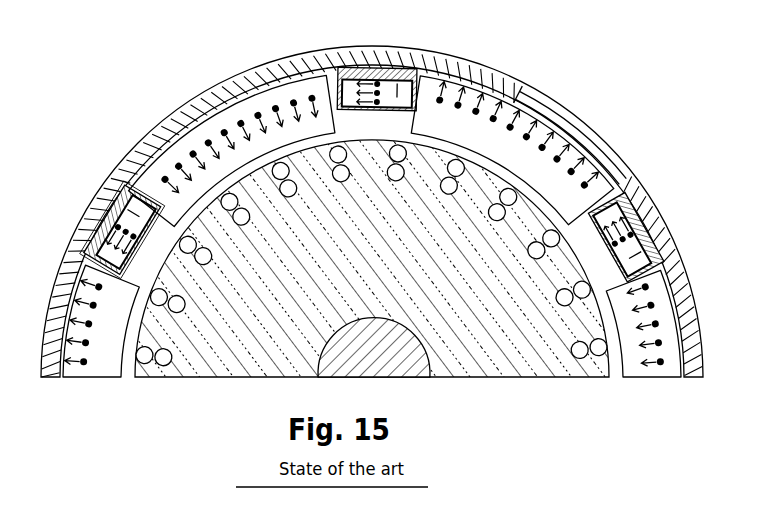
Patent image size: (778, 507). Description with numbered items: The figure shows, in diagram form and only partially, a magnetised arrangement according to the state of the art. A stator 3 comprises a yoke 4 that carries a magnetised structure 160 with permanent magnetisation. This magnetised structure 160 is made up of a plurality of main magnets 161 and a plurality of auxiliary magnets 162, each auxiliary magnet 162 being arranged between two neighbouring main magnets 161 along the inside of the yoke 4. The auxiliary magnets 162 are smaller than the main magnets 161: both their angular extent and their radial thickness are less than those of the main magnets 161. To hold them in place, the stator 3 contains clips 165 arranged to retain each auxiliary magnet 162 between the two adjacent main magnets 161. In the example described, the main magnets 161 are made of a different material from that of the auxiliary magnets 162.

The stator 3 is at (93, 392).
The yoke 4 is at (468, 72).
The magnetised structure 160 is at (651, 394).
The main magnets 161 is at (533, 100).
The auxiliary magnets 162 is at (397, 92).
The clips 165 is at (100, 193).